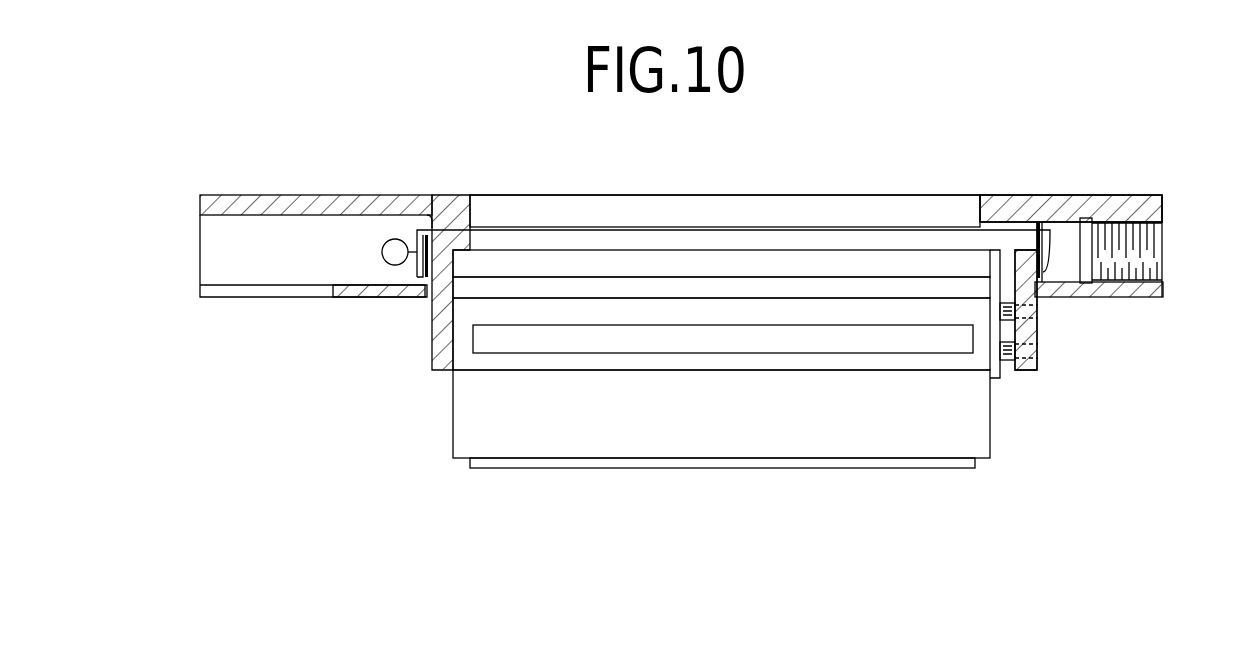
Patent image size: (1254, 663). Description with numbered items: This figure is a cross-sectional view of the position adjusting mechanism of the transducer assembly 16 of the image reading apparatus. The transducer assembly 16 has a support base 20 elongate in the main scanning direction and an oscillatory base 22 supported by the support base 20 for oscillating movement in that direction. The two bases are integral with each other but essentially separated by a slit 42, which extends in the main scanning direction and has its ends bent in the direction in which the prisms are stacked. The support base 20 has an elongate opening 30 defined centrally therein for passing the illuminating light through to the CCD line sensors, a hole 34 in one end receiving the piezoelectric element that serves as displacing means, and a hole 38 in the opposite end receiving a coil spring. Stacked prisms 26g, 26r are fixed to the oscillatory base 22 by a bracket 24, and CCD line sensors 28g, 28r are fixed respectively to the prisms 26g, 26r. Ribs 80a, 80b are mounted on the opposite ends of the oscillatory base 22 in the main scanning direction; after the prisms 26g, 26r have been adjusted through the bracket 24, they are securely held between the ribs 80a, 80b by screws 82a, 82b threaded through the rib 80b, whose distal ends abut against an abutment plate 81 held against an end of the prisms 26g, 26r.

The transducer assembly 16 is at (1065, 158).
The support base 20 is at (1012, 208).
The oscillatory base 22 is at (452, 235).
The bracket 24 is at (762, 268).
The prism 26r is at (867, 312).
The prism 26g is at (473, 442).
The CCD line sensor 28r is at (835, 343).
The CCD line sensor 28g is at (694, 463).
The elongate opening 30 is at (700, 195).
The hole 34 is at (290, 238).
The hole 38 is at (1140, 260).
The slit 42 is at (615, 195).
The rib 80a is at (437, 358).
The rib 80b is at (1027, 370).
The abutment plate 81 is at (998, 378).
The screw 82a is at (1030, 310).
The screw 82b is at (1030, 355).